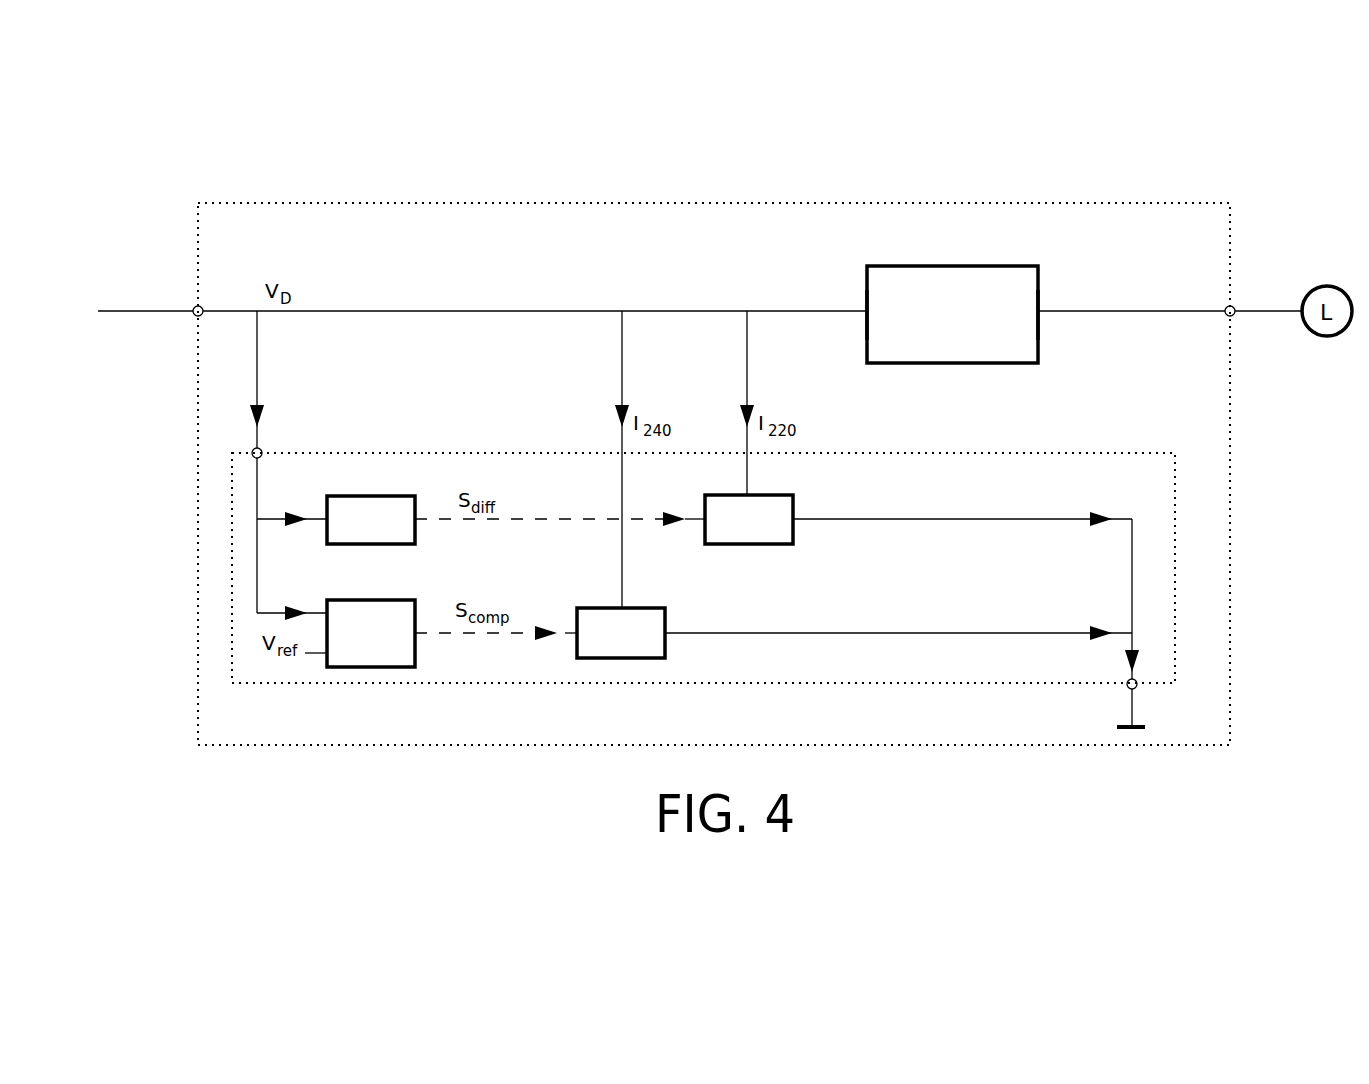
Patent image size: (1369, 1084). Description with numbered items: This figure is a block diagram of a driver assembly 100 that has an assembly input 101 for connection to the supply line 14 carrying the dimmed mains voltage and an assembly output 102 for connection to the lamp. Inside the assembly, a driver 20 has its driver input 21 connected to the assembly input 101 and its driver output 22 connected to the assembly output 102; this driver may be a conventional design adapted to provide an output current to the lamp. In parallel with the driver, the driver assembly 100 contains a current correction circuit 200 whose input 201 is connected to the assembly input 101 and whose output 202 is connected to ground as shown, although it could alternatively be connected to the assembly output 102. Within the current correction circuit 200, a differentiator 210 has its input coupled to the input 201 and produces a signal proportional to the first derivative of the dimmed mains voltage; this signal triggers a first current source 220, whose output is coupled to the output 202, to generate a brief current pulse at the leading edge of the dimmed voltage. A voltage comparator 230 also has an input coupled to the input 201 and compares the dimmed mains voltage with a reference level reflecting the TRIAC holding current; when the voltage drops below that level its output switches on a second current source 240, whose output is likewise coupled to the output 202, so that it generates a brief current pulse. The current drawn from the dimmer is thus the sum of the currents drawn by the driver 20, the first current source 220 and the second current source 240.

The supply line 14 is at (114, 308).
The driver assembly 100 is at (186, 559).
The assembly input 101 is at (178, 300).
The assembly output 102 is at (1250, 301).
The driver 20 is at (967, 324).
The driver input 21 is at (883, 315).
The driver output 22 is at (1021, 315).
The current correction circuit 200 is at (220, 628).
The current correction circuit input 201 is at (277, 466).
The current correction circuit output 202 is at (1113, 694).
The differentiator 210 is at (391, 532).
The first current source 220 is at (769, 532).
The voltage comparator 230 is at (391, 644).
The second current source 240 is at (641, 644).